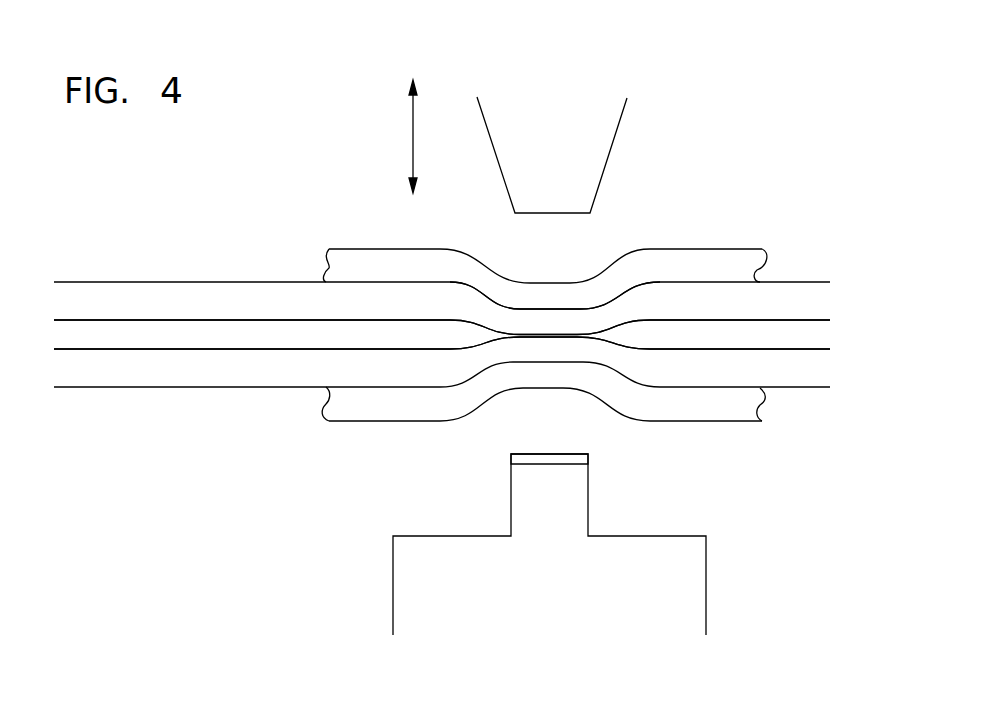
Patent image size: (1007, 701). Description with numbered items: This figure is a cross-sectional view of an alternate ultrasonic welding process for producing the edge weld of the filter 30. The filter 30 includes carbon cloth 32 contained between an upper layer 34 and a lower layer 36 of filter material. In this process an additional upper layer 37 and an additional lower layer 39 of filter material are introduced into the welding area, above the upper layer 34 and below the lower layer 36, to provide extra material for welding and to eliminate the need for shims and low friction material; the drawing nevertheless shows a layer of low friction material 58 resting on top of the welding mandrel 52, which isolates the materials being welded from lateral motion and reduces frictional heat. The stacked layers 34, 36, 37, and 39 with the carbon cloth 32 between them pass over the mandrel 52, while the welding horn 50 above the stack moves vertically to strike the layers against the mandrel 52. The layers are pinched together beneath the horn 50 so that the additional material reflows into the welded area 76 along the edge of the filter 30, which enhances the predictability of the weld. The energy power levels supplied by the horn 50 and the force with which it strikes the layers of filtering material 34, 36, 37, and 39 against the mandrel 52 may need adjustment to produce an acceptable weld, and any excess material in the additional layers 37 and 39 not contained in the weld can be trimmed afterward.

The filter 30 is at (136, 260).
The carbon cloth 32 is at (95, 333).
The upper layer 34 is at (207, 296).
The lower layer 36 is at (162, 370).
The additional upper layer 37 is at (391, 267).
The additional lower layer 39 is at (385, 402).
The welding horn 50 is at (598, 155).
The welding mandrel 52 is at (570, 515).
The low friction material 58 is at (513, 457).
The welded area 76 is at (553, 295).